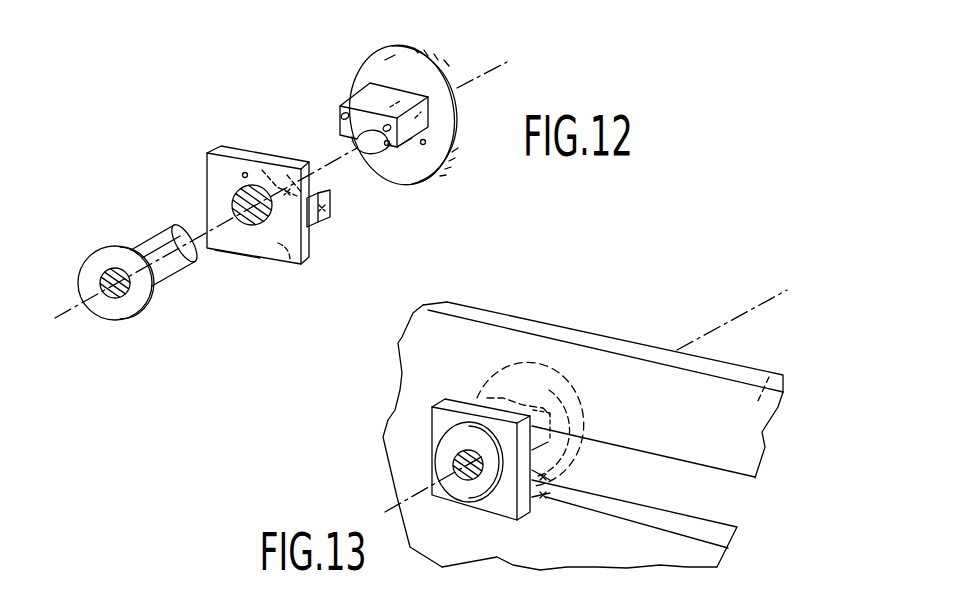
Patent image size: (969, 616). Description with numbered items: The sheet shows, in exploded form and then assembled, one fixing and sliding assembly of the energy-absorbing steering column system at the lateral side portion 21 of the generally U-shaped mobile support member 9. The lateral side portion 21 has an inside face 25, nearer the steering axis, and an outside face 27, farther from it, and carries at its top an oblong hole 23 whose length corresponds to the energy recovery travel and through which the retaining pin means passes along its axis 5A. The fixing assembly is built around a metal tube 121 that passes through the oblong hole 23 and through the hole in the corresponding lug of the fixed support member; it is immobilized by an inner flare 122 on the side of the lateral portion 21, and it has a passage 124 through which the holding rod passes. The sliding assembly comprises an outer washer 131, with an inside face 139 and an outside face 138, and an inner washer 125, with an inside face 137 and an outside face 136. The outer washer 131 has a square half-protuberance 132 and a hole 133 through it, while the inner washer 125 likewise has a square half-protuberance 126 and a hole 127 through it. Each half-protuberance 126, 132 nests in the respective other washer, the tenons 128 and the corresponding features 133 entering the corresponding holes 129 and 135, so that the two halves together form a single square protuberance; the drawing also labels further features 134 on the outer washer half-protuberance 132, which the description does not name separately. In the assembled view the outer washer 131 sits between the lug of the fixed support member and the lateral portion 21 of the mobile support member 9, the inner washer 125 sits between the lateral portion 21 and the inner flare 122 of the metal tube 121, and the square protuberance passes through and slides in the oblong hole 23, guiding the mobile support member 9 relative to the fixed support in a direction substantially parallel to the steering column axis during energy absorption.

In FIG. 12, the metal tube 121 is at (140, 237).
In FIG. 12, the inner flare 122 is at (122, 320).
In FIG. 13, the inner flare 122 is at (448, 447).
In FIG. 12, the passage 124 is at (100, 273).
In FIG. 13, the passage 124 is at (457, 458).
In FIG. 12, the inner washer 125 is at (214, 255).
In FIG. 13, the inner washer 125 is at (489, 513).
In FIG. 12, the square half-protuberance 126 is at (317, 230).
In FIG. 13, the square half-protuberance 126 is at (537, 470).
In FIG. 12, the hole 127 is at (235, 218).
In FIG. 12, the tenons 128 is at (287, 170).
In FIG. 12, the holes 129 is at (245, 172).
In FIG. 12, the outer washer 131 is at (457, 74).
In FIG. 13, the outer washer 131 is at (556, 366).
In FIG. 12, the square half-protuberance 132 is at (370, 92).
In FIG. 13, the square half-protuberance 132 is at (575, 405).
In FIG. 12, the hole 133 is at (410, 150).
In FIG. 12, the recesses 134 is at (342, 115).
In FIG. 12, the holes 135 is at (387, 146).
In FIG. 12, the outside face 136 is at (290, 263).
In FIG. 12, the inside face 137 is at (247, 240).
In FIG. 12, the outside face 138 is at (423, 50).
In FIG. 12, the inside face 139 is at (387, 67).
In FIG. 13, the lateral side portion 21 is at (427, 365).
In FIG. 13, the oblong hole 23 is at (702, 530).
In FIG. 13, the inside face 25 is at (703, 402).
In FIG. 13, the outside face 27 is at (773, 374).
In FIG. 13, the mobile support member 9 is at (640, 570).
In FIG. 12, the axis 5A is at (67, 317).
In FIG. 13, the axis 5A is at (765, 302).